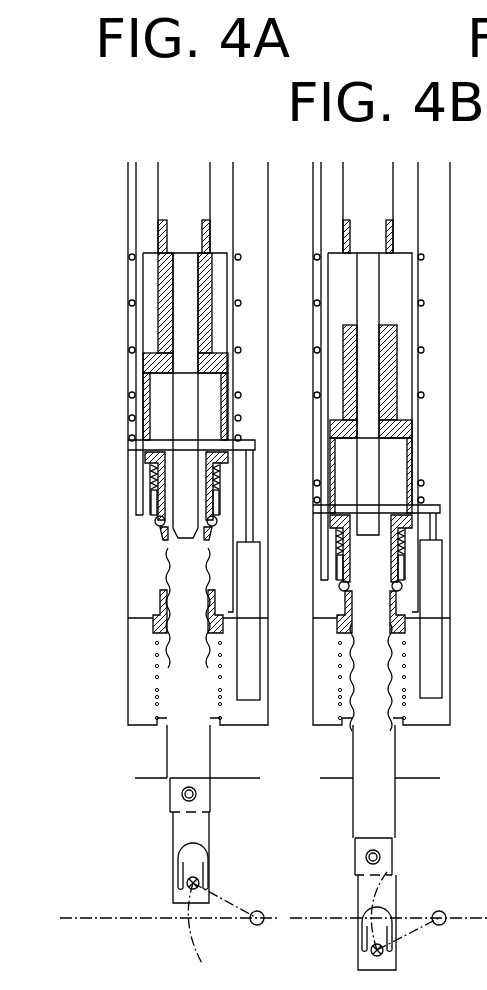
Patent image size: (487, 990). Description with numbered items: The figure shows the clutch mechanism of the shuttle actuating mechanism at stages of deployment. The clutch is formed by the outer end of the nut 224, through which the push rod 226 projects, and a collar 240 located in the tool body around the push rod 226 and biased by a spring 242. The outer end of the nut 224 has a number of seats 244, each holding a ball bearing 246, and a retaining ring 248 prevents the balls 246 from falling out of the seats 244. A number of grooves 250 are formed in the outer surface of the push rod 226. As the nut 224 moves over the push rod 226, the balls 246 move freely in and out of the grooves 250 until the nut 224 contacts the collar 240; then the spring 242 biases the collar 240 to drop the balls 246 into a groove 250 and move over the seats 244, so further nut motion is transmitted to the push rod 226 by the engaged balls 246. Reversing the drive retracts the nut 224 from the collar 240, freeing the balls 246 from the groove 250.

The nut 224 is at (145, 455).
The push rod 226 is at (182, 748).
The collar 240 is at (150, 622).
The spring 242 is at (148, 660).
The seats 244 is at (154, 521).
The ball bearing 246 is at (178, 538).
The retaining ring 248 is at (140, 497).
The grooves 250 is at (178, 658).